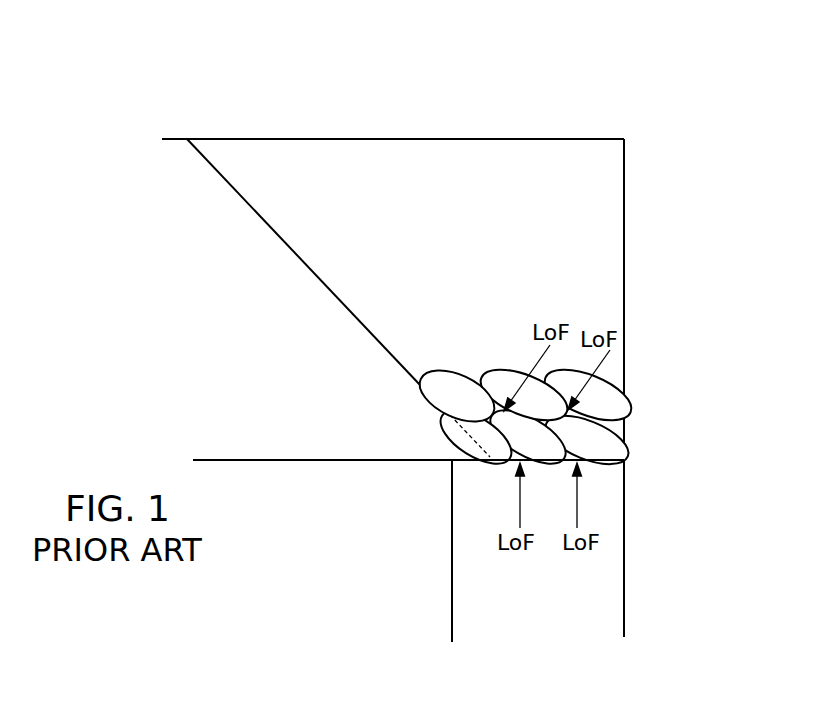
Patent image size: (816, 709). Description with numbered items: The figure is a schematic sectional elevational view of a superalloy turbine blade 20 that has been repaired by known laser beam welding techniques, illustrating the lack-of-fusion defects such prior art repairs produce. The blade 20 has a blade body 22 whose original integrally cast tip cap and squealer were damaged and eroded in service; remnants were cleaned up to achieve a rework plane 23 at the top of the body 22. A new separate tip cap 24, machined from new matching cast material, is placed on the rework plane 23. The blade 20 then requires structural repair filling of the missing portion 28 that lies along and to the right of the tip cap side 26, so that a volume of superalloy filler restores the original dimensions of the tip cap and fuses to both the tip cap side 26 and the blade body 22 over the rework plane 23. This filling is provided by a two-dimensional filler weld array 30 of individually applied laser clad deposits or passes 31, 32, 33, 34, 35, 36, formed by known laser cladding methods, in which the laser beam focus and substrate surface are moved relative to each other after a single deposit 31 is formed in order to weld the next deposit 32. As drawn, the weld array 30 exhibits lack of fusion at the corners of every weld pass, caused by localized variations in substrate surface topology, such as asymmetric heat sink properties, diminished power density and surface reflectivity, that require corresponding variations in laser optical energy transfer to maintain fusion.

The superalloy turbine blade 20 is at (356, 84).
The blade body 22 is at (470, 578).
The rework plane 23 is at (580, 458).
The tip cap 24 is at (198, 228).
The tip cap side 26 is at (270, 226).
The missing portion 28 is at (530, 167).
The filler weld array 30 is at (409, 445).
The laser clad deposit 31 is at (472, 452).
The laser clad deposit 32 is at (548, 453).
The laser clad deposit 33 is at (603, 447).
The laser clad deposit 34 is at (450, 390).
The laser clad deposit 35 is at (517, 378).
The laser clad deposit 36 is at (605, 393).